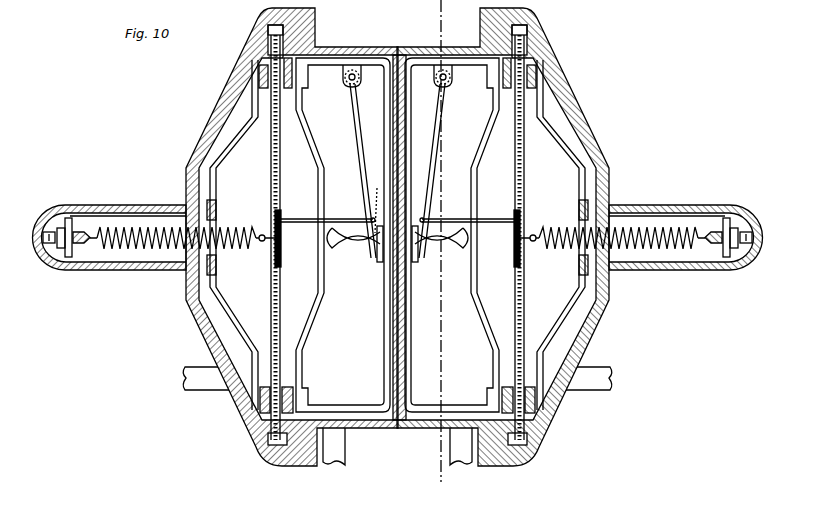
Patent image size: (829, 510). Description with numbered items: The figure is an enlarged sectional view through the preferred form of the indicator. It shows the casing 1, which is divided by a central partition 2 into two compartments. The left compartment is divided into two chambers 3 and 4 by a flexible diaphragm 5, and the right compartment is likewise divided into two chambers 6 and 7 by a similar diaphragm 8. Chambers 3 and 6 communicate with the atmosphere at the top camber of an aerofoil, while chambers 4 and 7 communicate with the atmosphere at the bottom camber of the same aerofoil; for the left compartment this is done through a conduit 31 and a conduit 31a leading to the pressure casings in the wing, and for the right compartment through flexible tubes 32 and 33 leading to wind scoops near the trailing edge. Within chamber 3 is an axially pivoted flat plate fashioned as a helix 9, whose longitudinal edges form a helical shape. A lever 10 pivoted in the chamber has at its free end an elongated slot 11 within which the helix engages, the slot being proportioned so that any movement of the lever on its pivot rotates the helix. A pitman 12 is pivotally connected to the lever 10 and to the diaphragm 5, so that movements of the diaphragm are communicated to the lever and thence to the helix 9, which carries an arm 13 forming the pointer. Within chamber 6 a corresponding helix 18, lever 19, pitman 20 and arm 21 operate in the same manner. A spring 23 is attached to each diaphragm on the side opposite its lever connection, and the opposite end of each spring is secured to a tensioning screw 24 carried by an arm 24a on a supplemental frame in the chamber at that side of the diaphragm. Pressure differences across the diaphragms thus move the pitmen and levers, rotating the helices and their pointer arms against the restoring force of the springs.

The casing 1 is at (370, 40).
The central partition 2 is at (400, 294).
The chamber 3 is at (343, 235).
The chamber 4 is at (250, 237).
The flexible diaphragm 5 is at (282, 278).
The chamber 6 is at (452, 235).
The chamber 7 is at (545, 237).
The diaphragm 8 is at (515, 292).
The helix 9 is at (367, 241).
The lever 10 is at (364, 158).
The elongated slot 11 is at (425, 485).
The pitman 12 is at (343, 216).
The arm 13 is at (380, 262).
The helix 18 is at (459, 244).
The lever 19 is at (437, 149).
The pitman 20 is at (454, 218).
The arm 21 is at (420, 262).
The spring 23 is at (162, 252).
The tensioning screw 24 is at (84, 244).
The arm 24a is at (127, 218).
The conduit 31 is at (335, 445).
The conduit 31a is at (215, 382).
The flexible tube 32 is at (457, 438).
The flexible tube 33 is at (592, 369).